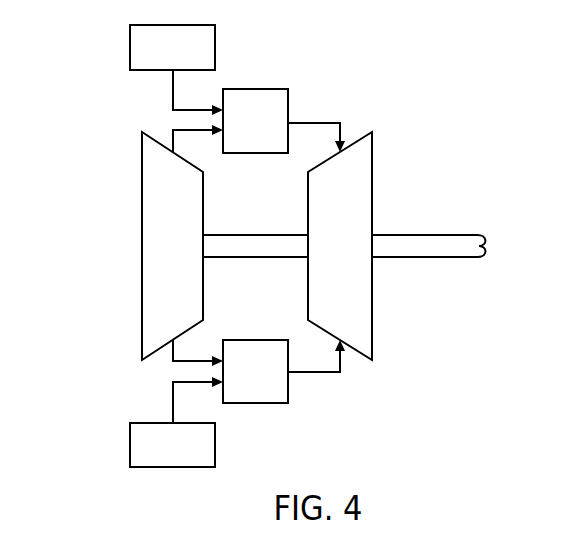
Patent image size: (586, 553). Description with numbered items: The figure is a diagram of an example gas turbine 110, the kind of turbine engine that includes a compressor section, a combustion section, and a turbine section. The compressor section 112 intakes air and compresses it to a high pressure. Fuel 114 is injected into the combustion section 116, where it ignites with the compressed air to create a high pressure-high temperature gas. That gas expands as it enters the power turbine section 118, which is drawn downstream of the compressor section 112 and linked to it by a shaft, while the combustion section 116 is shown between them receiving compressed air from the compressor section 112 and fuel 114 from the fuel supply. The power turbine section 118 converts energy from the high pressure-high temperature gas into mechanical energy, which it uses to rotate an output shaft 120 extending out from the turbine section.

The gas turbine 110 is at (90, 247).
The compressor section 112 is at (192, 260).
The fuel 114 is at (130, 46).
The combustion section 116 is at (277, 135).
The power turbine section 118 is at (322, 260).
The output shaft 120 is at (428, 258).